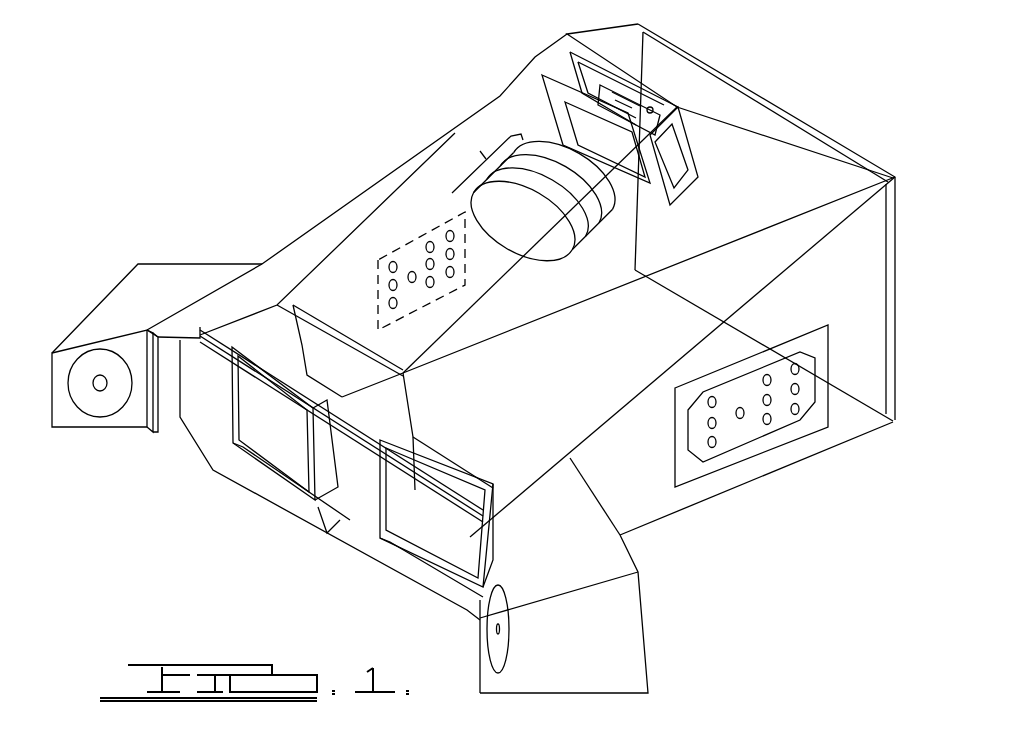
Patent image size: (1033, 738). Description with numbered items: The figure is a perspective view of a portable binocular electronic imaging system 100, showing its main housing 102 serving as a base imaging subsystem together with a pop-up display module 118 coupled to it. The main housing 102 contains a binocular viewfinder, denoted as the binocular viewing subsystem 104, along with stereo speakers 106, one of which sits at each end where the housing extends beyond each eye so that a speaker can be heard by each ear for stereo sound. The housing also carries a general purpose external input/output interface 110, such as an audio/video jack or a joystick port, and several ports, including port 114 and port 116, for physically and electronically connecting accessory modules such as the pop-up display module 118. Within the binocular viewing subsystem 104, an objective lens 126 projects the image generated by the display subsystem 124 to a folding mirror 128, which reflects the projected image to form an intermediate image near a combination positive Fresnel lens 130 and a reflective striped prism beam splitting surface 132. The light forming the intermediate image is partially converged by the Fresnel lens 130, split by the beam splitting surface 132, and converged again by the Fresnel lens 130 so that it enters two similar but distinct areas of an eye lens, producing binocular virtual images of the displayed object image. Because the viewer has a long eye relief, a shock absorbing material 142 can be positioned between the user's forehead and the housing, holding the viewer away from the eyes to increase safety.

The portable binocular electronic imaging system 100 is at (250, 112).
The main housing 102 is at (897, 430).
The binocular viewing subsystem 104 is at (542, 464).
The stereo speakers 106 is at (104, 438).
The general purpose external input/output interface 110 is at (412, 228).
The port 114 is at (796, 458).
The port 116 is at (672, 522).
The pop-up display module 118 is at (350, 225).
The display subsystem 124 is at (682, 200).
The objective lens 126 is at (482, 140).
The folding mirror 128 is at (303, 292).
The combination positive Fresnel lens 130 is at (798, 160).
The reflective striped prism beam splitting surface 132 is at (264, 488).
The shock absorbing material 142 is at (160, 360).